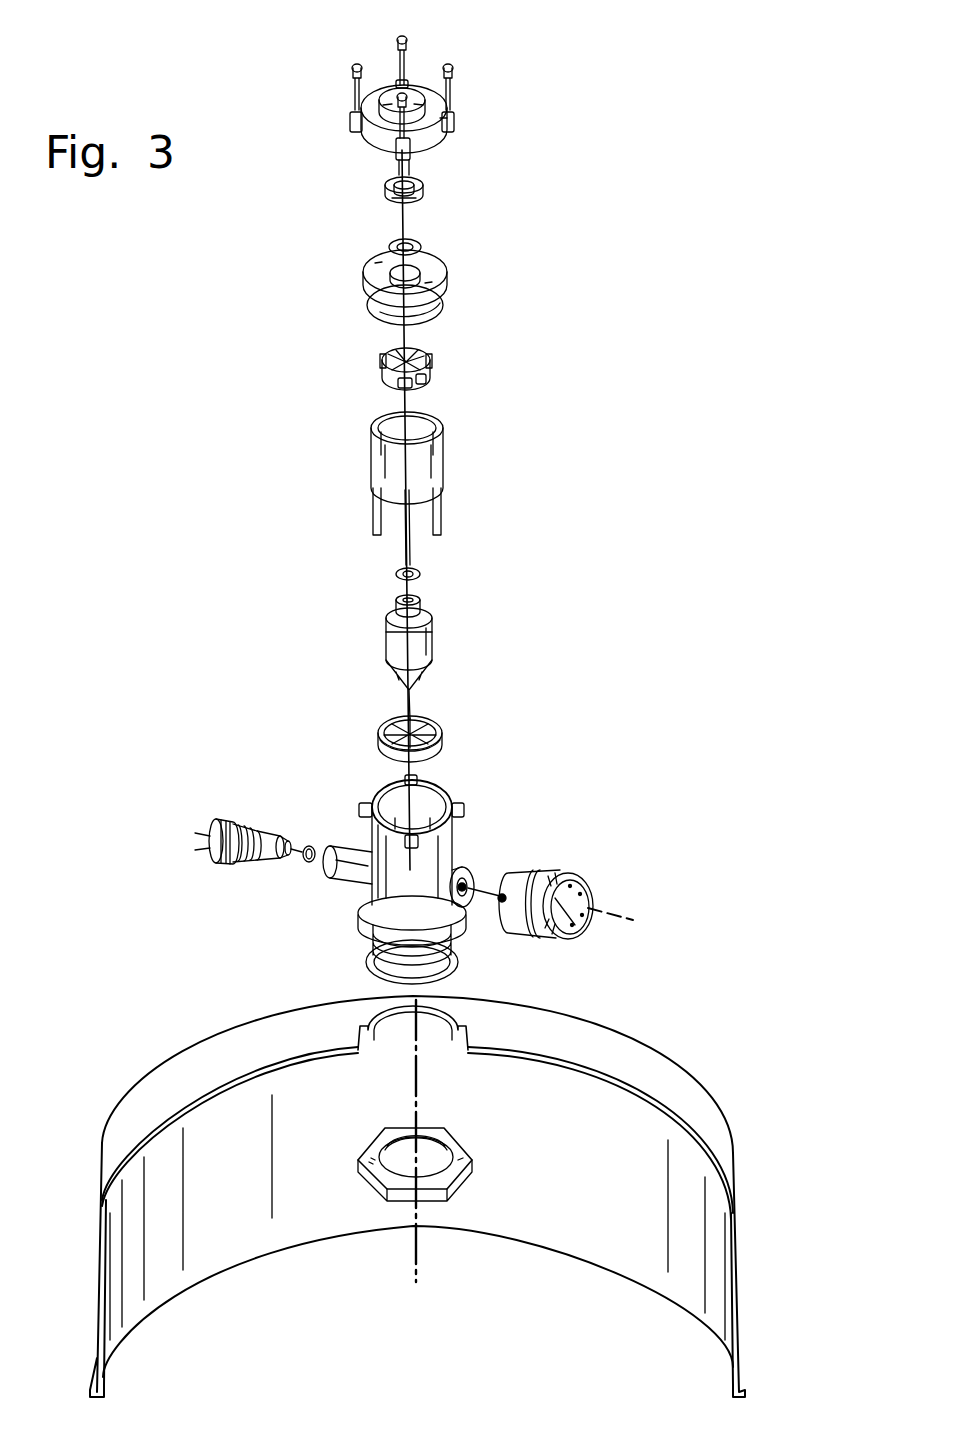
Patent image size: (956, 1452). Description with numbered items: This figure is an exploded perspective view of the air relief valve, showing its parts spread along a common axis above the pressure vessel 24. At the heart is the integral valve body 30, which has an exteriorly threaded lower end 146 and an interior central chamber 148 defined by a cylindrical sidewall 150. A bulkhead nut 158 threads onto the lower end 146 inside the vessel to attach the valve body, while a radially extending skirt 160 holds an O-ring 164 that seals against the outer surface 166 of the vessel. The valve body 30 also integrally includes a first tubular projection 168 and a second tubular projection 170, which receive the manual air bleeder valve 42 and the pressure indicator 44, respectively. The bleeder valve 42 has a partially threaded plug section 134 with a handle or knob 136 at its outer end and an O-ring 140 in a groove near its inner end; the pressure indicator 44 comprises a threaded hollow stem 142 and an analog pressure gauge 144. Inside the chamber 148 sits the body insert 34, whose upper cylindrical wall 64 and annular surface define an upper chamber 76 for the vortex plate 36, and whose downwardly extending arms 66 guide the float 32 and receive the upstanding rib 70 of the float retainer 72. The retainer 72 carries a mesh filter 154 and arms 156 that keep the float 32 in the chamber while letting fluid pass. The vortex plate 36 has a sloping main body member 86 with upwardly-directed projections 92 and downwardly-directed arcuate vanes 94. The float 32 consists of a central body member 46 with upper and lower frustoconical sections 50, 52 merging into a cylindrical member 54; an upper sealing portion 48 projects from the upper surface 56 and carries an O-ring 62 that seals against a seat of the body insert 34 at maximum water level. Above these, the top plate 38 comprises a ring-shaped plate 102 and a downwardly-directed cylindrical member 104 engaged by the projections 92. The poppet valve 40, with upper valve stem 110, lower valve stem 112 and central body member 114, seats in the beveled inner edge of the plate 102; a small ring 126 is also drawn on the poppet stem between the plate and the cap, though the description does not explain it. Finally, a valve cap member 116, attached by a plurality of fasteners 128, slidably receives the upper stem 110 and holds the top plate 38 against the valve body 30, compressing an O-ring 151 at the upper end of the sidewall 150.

The pressure vessel 24 is at (232, 1028).
The integral valve body 30 is at (456, 862).
The float 32 is at (368, 623).
The body insert 34 is at (464, 446).
The vortex plate 36 is at (464, 371).
The top plate 38 is at (466, 264).
The poppet valve 40 is at (424, 190).
The manual air bleeder valve 42 is at (226, 862).
The pressure indicator 44 is at (584, 876).
The central body member 46 is at (388, 660).
The upper sealing portion 48 is at (418, 598).
The upper frustoconical section 50 is at (416, 628).
The lower frustoconical section 52 is at (396, 680).
The cylindrical member 54 is at (434, 648).
The upper surface 56 is at (428, 612).
The O-ring 62 is at (393, 577).
The upper cylindrical wall 64 is at (392, 460).
The arms 66 is at (374, 500).
The upstanding rib 70 is at (390, 728).
The float retainer 72 is at (364, 737).
The upper chamber 76 is at (422, 425).
The main body member 86 is at (388, 364).
The upwardly-directed projections 92 is at (430, 352).
The arcuate vanes 94 is at (396, 385).
The ring-shaped plate 102 is at (375, 278).
The cylindrical member 104 is at (388, 312).
The upper valve stem 110 is at (400, 175).
The lower valve stem 112 is at (400, 228).
The central body member 114 is at (392, 200).
The valve cap member 116 is at (427, 125).
The ring 126 is at (420, 242).
The fasteners 128 is at (478, 14).
The plug section 134 is at (260, 862).
The handle or knob 136 is at (218, 824).
The O-ring 140 is at (307, 846).
The hollow stem 142 is at (506, 894).
The analog pressure gauge 144 is at (578, 935).
The threaded lower end 146 is at (380, 942).
The interior central chamber 148 is at (430, 797).
The cylindrical sidewall 150 is at (382, 830).
The O-ring 151 is at (442, 303).
The mesh filter 154 is at (440, 722).
The arms 156 is at (444, 738).
The bulkhead nut 158 is at (475, 1172).
The skirt 160 is at (376, 915).
The O-ring 164 is at (458, 972).
The outer surface 166 is at (470, 1022).
The first tubular projection 168 is at (342, 873).
The second tubular projection 170 is at (498, 884).